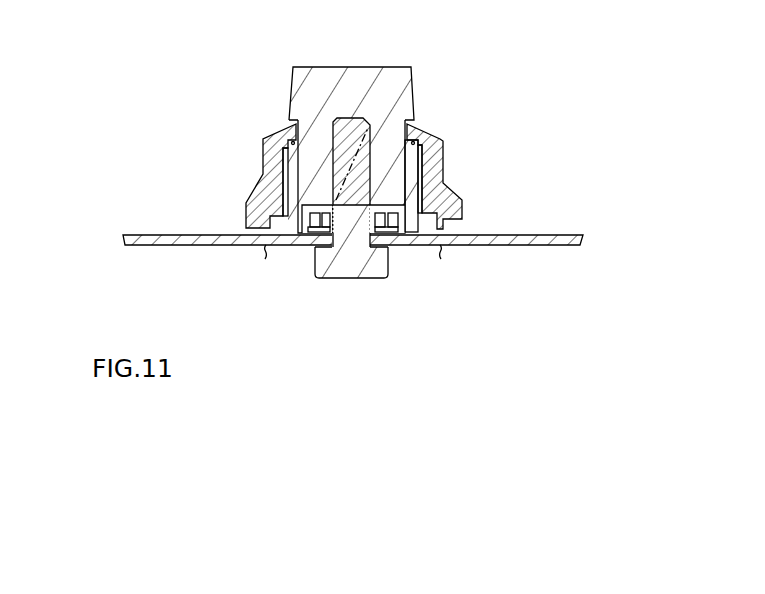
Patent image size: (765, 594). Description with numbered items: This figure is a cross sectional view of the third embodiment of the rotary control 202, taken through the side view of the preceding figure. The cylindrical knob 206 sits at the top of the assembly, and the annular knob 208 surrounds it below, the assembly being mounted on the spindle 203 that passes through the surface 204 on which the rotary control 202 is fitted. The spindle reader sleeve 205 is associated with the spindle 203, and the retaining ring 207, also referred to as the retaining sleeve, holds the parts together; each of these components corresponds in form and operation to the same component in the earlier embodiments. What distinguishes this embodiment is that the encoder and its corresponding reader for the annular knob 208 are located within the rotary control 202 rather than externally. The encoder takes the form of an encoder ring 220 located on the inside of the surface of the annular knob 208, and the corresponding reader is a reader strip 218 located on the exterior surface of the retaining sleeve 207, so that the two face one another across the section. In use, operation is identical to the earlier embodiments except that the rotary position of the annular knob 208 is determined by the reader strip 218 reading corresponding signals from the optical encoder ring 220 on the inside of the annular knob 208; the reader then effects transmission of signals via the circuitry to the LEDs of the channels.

The rotary control 202 is at (257, 103).
The spindle 203 is at (383, 270).
The surface 204 is at (150, 236).
The spindle reader sleeve 205 is at (310, 225).
The cylindrical knob 206 is at (410, 82).
The retaining ring 207 is at (265, 206).
The annular knob 208 is at (432, 138).
The reader strip 218 is at (413, 183).
The encoder ring 220 is at (425, 173).